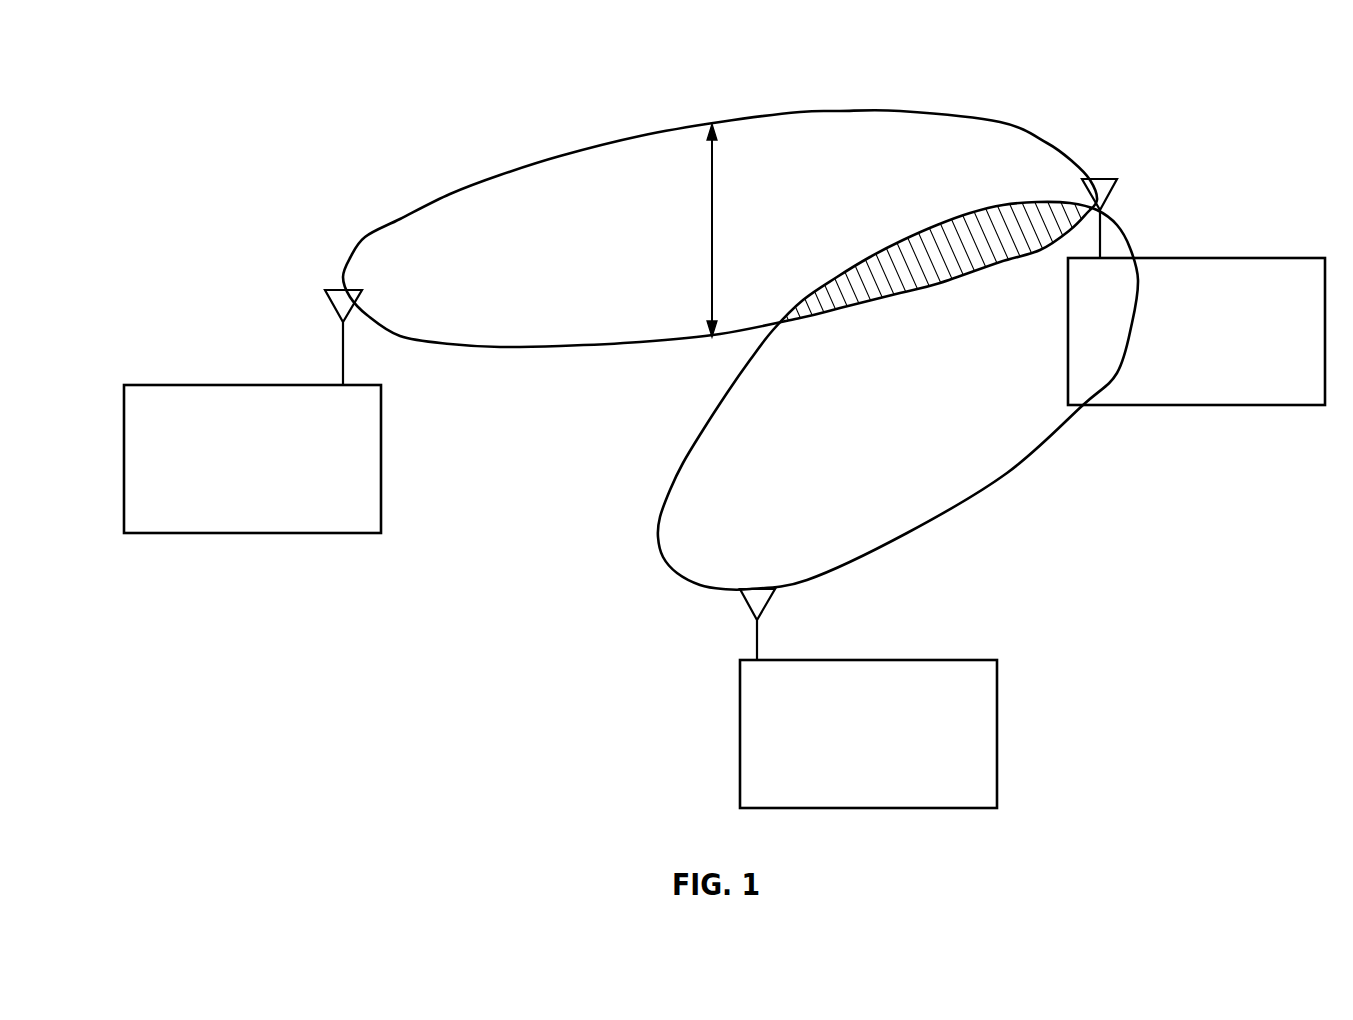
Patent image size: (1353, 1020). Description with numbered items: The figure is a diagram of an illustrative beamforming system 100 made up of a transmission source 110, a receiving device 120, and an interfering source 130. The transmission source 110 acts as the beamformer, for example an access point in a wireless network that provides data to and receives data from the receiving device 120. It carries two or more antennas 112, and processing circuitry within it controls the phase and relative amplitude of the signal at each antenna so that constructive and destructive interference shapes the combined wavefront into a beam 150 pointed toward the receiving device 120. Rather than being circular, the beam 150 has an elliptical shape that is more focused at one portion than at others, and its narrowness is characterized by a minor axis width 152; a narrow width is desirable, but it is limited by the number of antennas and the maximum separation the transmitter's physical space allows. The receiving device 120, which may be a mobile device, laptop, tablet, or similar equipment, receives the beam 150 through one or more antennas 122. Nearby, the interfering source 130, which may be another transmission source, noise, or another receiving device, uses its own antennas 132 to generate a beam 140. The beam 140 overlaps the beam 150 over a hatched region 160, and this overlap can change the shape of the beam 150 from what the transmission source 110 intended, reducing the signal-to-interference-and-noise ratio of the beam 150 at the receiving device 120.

The beamforming system 100 is at (176, 79).
The transmission source 110 is at (196, 385).
The antennas 112 is at (336, 290).
The receiving device 120 is at (1250, 258).
The antennas 122 is at (1108, 179).
The interfering source 130 is at (923, 660).
The antennas 132 is at (745, 607).
The beam 140 is at (1005, 479).
The beam 150 is at (565, 152).
The minor axis width 152 is at (740, 205).
The region 160 is at (900, 262).